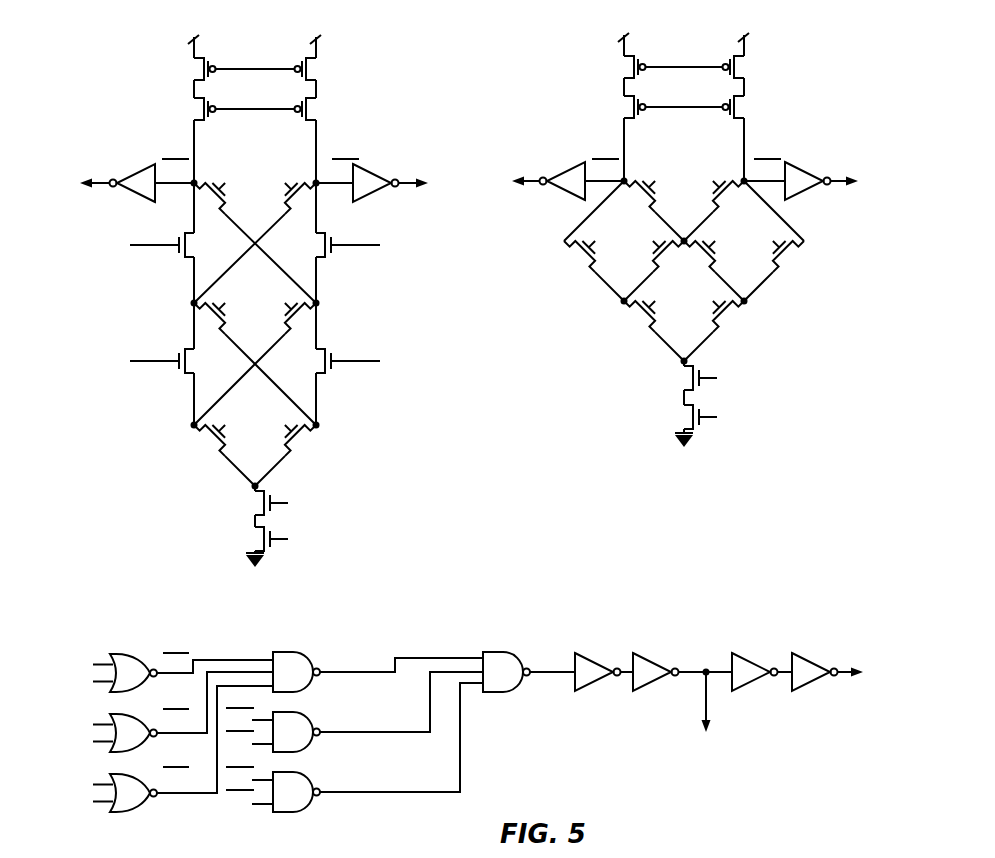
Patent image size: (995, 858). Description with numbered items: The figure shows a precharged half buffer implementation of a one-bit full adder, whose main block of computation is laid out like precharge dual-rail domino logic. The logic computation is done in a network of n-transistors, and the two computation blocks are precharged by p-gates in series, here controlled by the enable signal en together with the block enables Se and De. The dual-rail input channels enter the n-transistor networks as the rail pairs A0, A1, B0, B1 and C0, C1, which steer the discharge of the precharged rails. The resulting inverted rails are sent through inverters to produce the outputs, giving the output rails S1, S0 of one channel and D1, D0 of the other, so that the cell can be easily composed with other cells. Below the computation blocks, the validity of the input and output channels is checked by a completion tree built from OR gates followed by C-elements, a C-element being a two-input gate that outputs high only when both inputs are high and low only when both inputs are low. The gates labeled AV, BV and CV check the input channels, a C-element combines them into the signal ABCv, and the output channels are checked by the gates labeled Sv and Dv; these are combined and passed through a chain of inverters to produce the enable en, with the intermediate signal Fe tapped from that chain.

The enable signal en is at (545, 366).
The sum enable signal Se is at (257, 299).
The difference enable signal De is at (689, 236).
The sum output bit 1 inverter S1 is at (121, 180).
The sum output bit 0 inverter S0 is at (397, 180).
The difference output bit 1 inverter D1 is at (554, 179).
The difference output bit 0 inverter D0 is at (824, 179).
The A0 input transistors A0 is at (423, 282).
The A1 input transistors A1 is at (437, 244).
The B0 input transistors B0 is at (532, 334).
The B1 input transistors B1 is at (465, 334).
The C0 input transistors C0 is at (423, 264).
The C1 input transistors C1 is at (438, 245).
The A valid NOR gate AV is at (167, 674).
The B valid NOR gate BV is at (167, 713).
The C valid NOR gate CV is at (167, 749).
The ABC valid NAND gate ABCv is at (378, 671).
The sum valid NAND gate Sv is at (354, 713).
The difference valid NAND gate Dv is at (354, 748).
The Fe output tap Fe is at (704, 716).